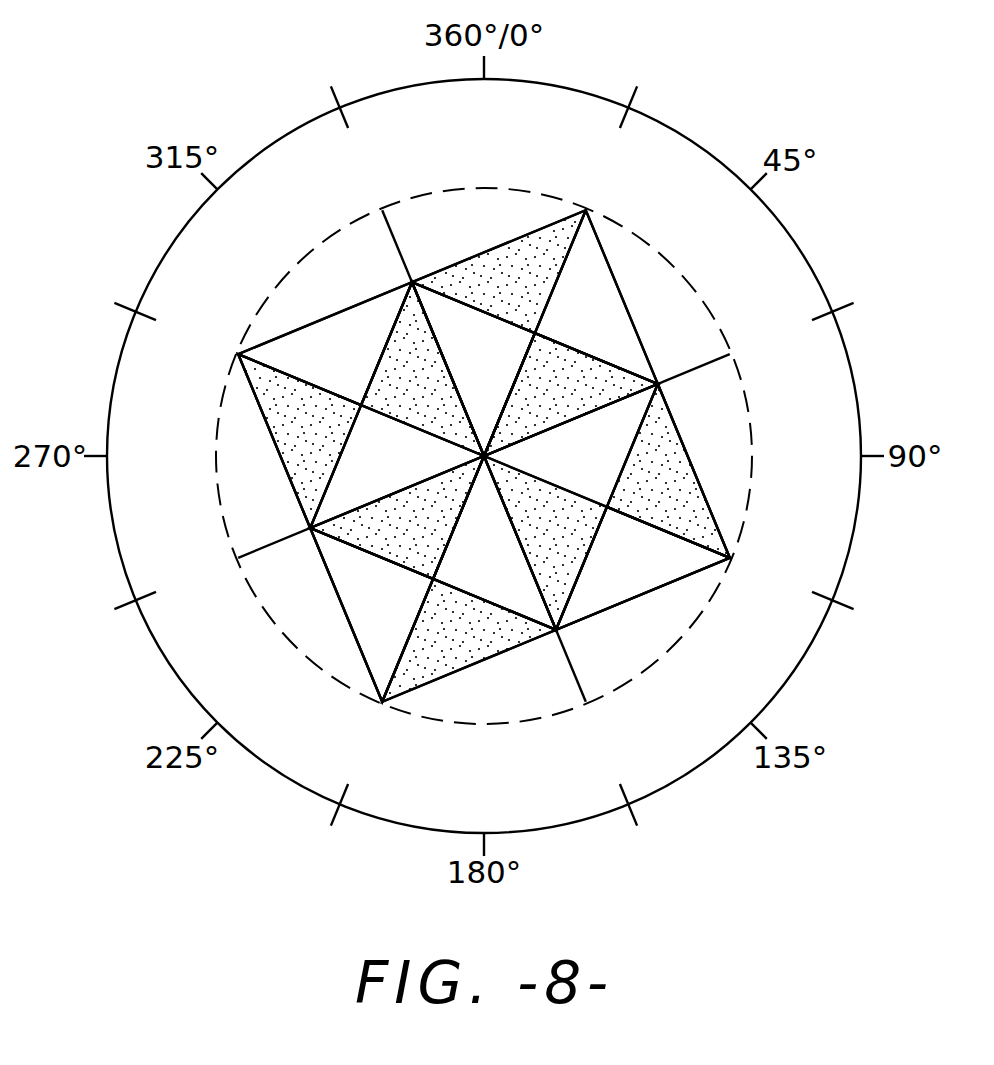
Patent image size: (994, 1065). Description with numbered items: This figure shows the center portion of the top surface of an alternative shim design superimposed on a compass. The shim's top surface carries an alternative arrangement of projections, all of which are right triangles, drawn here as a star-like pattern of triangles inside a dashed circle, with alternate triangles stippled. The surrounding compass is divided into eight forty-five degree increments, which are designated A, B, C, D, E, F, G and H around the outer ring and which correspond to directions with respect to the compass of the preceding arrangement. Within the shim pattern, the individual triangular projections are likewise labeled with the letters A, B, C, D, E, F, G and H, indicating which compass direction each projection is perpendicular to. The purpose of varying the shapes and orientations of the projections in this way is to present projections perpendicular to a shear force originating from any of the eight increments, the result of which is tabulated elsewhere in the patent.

The compass increment designation A is at (475, 588).
The compass increment designation B is at (452, 363).
The compass increment designation C is at (347, 450).
The compass increment designation D is at (577, 423).
The compass increment designation E is at (493, 321).
The compass increment designation F is at (518, 547).
The compass increment designation G is at (622, 468).
The compass increment designation H is at (393, 493).